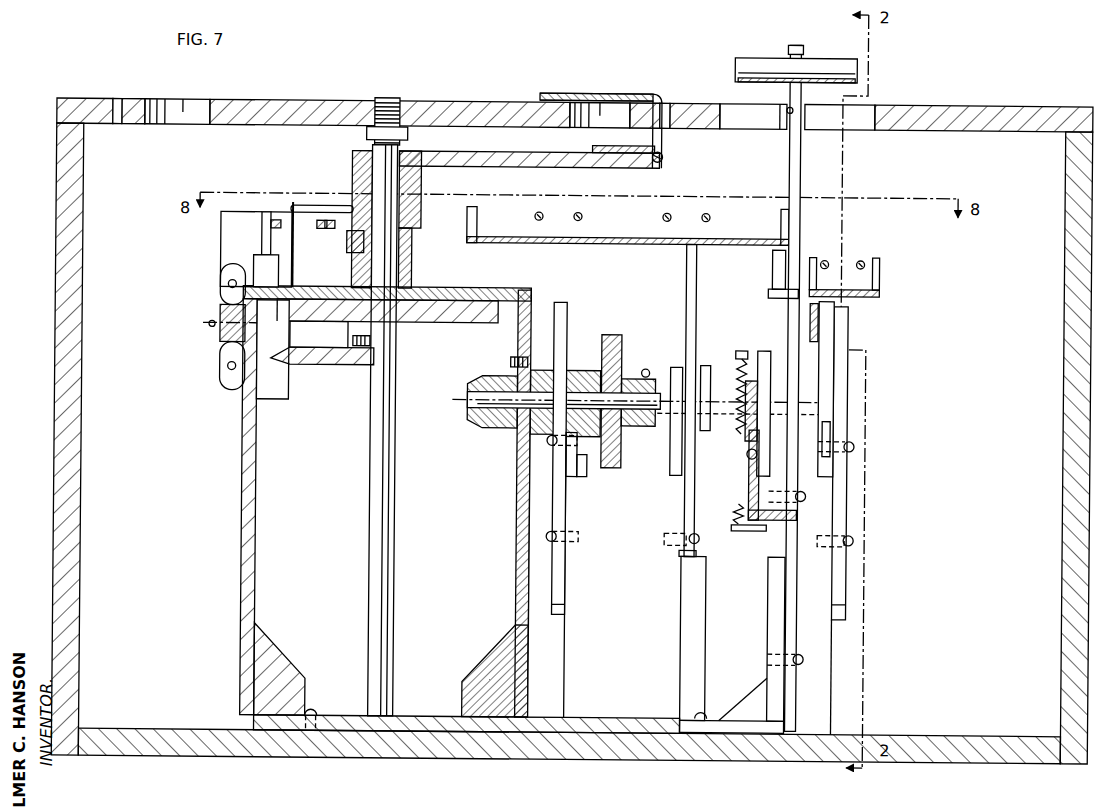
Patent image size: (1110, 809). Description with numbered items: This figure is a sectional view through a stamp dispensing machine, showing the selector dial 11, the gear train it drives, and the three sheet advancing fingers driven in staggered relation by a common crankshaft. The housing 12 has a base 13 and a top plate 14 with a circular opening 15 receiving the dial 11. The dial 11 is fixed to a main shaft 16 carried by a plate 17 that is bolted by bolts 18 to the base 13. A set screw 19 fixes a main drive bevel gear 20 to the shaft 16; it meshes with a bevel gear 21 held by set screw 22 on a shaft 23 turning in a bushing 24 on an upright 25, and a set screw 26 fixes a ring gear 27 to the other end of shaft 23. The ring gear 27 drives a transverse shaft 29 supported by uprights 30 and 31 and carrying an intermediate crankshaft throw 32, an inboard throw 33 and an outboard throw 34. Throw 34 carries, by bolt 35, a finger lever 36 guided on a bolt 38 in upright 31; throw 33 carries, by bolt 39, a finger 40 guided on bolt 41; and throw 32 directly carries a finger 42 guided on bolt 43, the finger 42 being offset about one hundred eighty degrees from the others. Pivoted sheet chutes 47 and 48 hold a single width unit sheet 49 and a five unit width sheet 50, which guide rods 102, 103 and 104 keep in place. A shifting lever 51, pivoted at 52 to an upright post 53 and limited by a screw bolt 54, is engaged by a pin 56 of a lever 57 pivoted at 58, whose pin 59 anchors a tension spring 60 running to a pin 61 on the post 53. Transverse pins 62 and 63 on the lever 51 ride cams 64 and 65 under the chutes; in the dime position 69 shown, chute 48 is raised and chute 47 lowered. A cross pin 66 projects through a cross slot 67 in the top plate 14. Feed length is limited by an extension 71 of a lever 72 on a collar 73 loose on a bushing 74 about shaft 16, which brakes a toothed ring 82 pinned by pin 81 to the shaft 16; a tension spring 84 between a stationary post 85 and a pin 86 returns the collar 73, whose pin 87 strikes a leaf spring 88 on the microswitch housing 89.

The selector dial 11 is at (262, 97).
The housing 12 is at (55, 398).
The base 13 is at (935, 728).
The top plate 14 is at (84, 98).
The circular opening 15 is at (120, 97).
The main shaft 16 is at (399, 477).
The plate 17 is at (337, 716).
The bolts 18 is at (318, 708).
The set screw 19 is at (354, 338).
The main drive bevel gear 20 is at (317, 362).
The bevel gear 21 is at (488, 424).
The set screw 22 is at (517, 353).
The shaft 23 is at (471, 396).
The bushing 24 is at (574, 368).
The upright 25 is at (521, 517).
The set screw 26 is at (647, 372).
The ring gear 27 is at (624, 345).
The shaft 29 is at (713, 382).
The upright 30 is at (568, 654).
The upright 31 is at (838, 625).
The crankshaft throw 32 is at (686, 378).
The crankshaft throw 33 is at (580, 455).
The crankshaft throw 34 is at (834, 418).
The bolt 35 is at (858, 441).
The finger lever 36 is at (851, 321).
The bolt 38 is at (858, 533).
The bolt 39 is at (550, 440).
The finger 40 is at (569, 308).
The bolt 41 is at (561, 536).
The finger 42 is at (698, 281).
The bolt 43 is at (704, 533).
The sheet chute 47 is at (881, 266).
The sheet chute 48 is at (781, 213).
The single width unit sheet 49 is at (864, 256).
The five unit width sheet 50 is at (640, 231).
The shifting lever 51 is at (801, 161).
The pivot bolt 52 is at (809, 652).
The upright post 53 is at (772, 630).
The screw bolt 54 is at (810, 490).
The pin 56 is at (780, 403).
The lever 57 is at (773, 357).
The pivot 58 is at (749, 447).
The pin 59 is at (747, 348).
The tension spring 60 is at (762, 373).
The pin 61 is at (755, 526).
The transverse pin 62 is at (780, 289).
The transverse pin 63 is at (881, 287).
The cam 64 is at (774, 262).
The cam 65 is at (821, 330).
The cross pin 66 is at (850, 63).
The cross slot 67 is at (866, 106).
The dime position 69 is at (787, 102).
The extension 71 is at (585, 90).
The lever 72 is at (502, 148).
The collar 73 is at (423, 178).
The bushing 74 is at (358, 150).
The pin 81 is at (423, 284).
The ring 82 is at (455, 318).
The tension spring 84 is at (350, 242).
The stationary post 85 is at (263, 241).
The pin 86 is at (331, 217).
The pin 87 is at (322, 204).
The leaf spring 88 is at (295, 241).
The housing 89 is at (278, 398).
The guide rod 102 is at (578, 210).
The guide rod 103 is at (706, 209).
The guide rod 104 is at (829, 256).